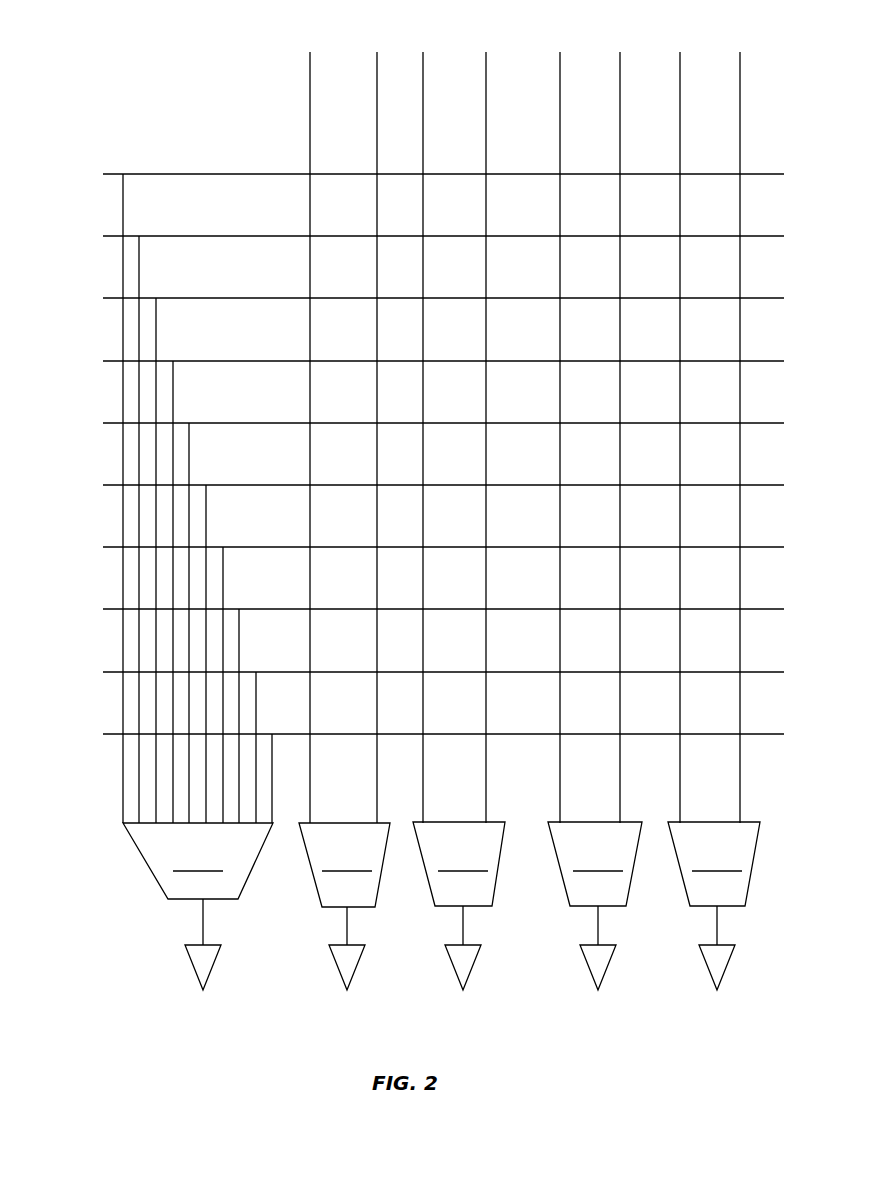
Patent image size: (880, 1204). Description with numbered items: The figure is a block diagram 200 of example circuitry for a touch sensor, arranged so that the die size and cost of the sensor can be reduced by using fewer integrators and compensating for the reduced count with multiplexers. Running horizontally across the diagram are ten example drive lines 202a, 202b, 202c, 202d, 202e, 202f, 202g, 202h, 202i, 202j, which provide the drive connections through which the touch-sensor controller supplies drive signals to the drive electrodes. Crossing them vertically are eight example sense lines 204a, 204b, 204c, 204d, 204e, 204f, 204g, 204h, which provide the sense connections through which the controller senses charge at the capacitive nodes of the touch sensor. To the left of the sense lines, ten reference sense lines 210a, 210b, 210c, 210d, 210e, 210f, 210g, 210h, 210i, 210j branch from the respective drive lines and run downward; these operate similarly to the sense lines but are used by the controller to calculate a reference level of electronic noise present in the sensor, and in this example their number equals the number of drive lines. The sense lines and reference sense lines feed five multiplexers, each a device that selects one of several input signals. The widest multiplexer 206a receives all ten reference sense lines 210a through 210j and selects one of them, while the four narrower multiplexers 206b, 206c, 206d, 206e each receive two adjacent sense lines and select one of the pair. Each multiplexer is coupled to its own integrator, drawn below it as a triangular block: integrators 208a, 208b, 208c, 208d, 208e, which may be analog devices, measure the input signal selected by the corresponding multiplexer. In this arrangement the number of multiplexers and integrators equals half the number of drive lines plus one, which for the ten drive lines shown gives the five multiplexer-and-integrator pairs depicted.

The block diagram 200 is at (94, 970).
The drive line 202a is at (115, 174).
The drive line 202b is at (115, 236).
The drive line 202c is at (115, 298).
The drive line 202d is at (115, 361).
The drive line 202e is at (115, 423).
The drive line 202f is at (115, 485).
The drive line 202g is at (115, 547).
The drive line 202h is at (115, 609).
The drive line 202i is at (115, 672).
The drive line 202j is at (115, 734).
The sense line 204a is at (309, 62).
The sense line 204b is at (376, 62).
The sense line 204c is at (424, 62).
The sense line 204d is at (487, 62).
The sense line 204e is at (561, 62).
The sense line 204f is at (621, 62).
The sense line 204g is at (681, 62).
The sense line 204h is at (741, 62).
The multiplexer 206a is at (198, 861).
The multiplexer 206b is at (344, 865).
The multiplexer 206c is at (459, 864).
The multiplexer 206d is at (595, 864).
The multiplexer 206e is at (714, 864).
The integrator 208a is at (195, 968).
The integrator 208b is at (339, 966).
The integrator 208c is at (455, 966).
The integrator 208d is at (590, 966).
The integrator 208e is at (709, 966).
The reference sense line 210a is at (124, 215).
The reference sense line 210b is at (140, 276).
The reference sense line 210c is at (157, 338).
The reference sense line 210d is at (174, 401).
The reference sense line 210e is at (190, 463).
The reference sense line 210f is at (207, 525).
The reference sense line 210g is at (224, 587).
The reference sense line 210h is at (272, 645).
The reference sense line 210i is at (285, 705).
The reference sense line 210j is at (274, 748).